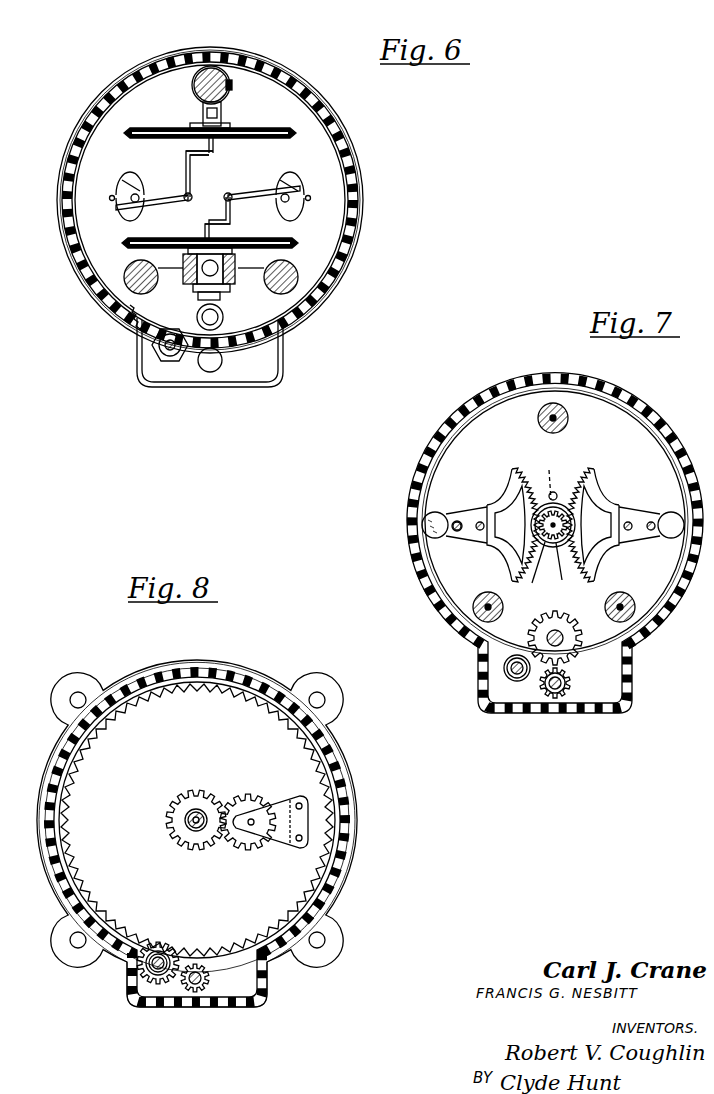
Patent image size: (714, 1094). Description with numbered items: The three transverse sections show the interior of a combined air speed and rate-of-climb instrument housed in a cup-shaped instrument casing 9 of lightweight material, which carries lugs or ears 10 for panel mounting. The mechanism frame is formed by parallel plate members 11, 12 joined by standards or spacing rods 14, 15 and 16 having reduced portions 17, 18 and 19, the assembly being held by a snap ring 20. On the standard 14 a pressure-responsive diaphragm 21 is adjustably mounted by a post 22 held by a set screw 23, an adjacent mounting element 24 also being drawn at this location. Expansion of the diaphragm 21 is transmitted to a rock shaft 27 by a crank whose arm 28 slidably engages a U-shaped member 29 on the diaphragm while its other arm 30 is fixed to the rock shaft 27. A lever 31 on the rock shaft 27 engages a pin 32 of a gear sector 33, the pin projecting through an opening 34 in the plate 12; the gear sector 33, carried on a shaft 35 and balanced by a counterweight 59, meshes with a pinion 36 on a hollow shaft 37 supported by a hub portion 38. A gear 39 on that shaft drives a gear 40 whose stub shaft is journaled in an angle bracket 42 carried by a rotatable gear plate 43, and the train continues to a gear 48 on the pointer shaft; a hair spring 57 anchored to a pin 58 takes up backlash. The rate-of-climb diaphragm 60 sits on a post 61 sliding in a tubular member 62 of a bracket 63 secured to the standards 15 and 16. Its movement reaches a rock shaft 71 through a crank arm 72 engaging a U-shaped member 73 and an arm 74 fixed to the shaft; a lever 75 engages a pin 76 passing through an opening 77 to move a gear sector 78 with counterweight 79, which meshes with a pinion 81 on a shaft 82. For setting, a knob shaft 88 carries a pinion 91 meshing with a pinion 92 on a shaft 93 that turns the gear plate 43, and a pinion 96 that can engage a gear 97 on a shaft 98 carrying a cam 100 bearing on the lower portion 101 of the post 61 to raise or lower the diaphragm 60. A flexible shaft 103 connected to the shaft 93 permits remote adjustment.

In FIG. 6, the instrument casing 9 is at (362, 240).
In FIG. 7, the instrument casing 9 is at (410, 470).
In FIG. 8, the instrument casing 9 is at (352, 770).
In FIG. 8, the lugs or ears 10 is at (58, 690).
In FIG. 7, the plate member 11 is at (665, 432).
In FIG. 6, the plate member 12 is at (355, 170).
In FIG. 6, the standard or spacing rod 14 is at (200, 78).
In FIG. 6, the standard or spacing rod 15 is at (128, 296).
In FIG. 6, the standard or spacing rod 16 is at (292, 290).
In FIG. 7, the reduced portion 17 is at (569, 420).
In FIG. 7, the reduced portion 18 is at (477, 598).
In FIG. 7, the reduced portion 19 is at (632, 600).
In FIG. 8, the snap ring 20 is at (135, 680).
In FIG. 6, the pressure-responsive diaphragm 21 is at (152, 128).
In FIG. 6, the post 22 is at (222, 112).
In FIG. 6, the set screw 23 is at (228, 86).
In FIG. 6, the motor shaft bearing 24 is at (205, 114).
In FIG. 6, the rock shaft 27 is at (193, 200).
In FIG. 6, the crank arm 28 is at (204, 158).
In FIG. 6, the U-shaped member 29 is at (214, 146).
In FIG. 6, the crank arm 30 is at (186, 168).
In FIG. 6, the lever 31 is at (160, 200).
In FIG. 6, the pin 32 is at (125, 196).
In FIG. 7, the pin 32 is at (478, 521).
In FIG. 6, the gear sector 33 is at (128, 178).
In FIG. 7, the gear sector 33 is at (500, 490).
In FIG. 6, the opening 34 is at (120, 210).
In FIG. 7, the shaft 35 is at (456, 531).
In FIG. 7, the pinion 36 is at (547, 478).
In FIG. 8, the hollow shaft 37 is at (188, 832).
In FIG. 8, the hub portion 38 is at (204, 833).
In FIG. 8, the gear 39 is at (170, 822).
In FIG. 8, the gear 40 is at (250, 795).
In FIG. 8, the angle bracket 42 is at (290, 800).
In FIG. 8, the gear plate 43 is at (175, 748).
In FIG. 8, the gear 48 is at (205, 794).
In FIG. 7, the hair spring 57 is at (535, 571).
In FIG. 7, the pin 58 is at (557, 493).
In FIG. 7, the counterweight 59 is at (437, 512).
In FIG. 6, the pressure-responsive diaphragm 60 is at (256, 238).
In FIG. 6, the post 61 is at (230, 286).
In FIG. 6, the tubular member 62 is at (190, 283).
In FIG. 6, the bracket 63 is at (138, 266).
In FIG. 6, the rock shaft 71 is at (230, 193).
In FIG. 6, the crank arm 72 is at (206, 222).
In FIG. 6, the U-shaped member 73 is at (238, 216).
In FIG. 6, the crank arm 74 is at (242, 200).
In FIG. 6, the lever 75 is at (262, 192).
In FIG. 6, the pin 76 is at (304, 210).
In FIG. 7, the pin 76 is at (630, 521).
In FIG. 6, the opening 77 is at (296, 222).
In FIG. 6, the gear sector 78 is at (292, 178).
In FIG. 7, the gear sector 78 is at (616, 490).
In FIG. 7, the counterweight 79 is at (667, 537).
In FIG. 7, the pinion 81 is at (572, 525).
In FIG. 7, the shaft 82 is at (562, 568).
In FIG. 7, the shaft 88 is at (556, 698).
In FIG. 8, the shaft 88 is at (204, 986).
In FIG. 8, the pinion 91 is at (195, 994).
In FIG. 8, the pinion 92 is at (157, 986).
In FIG. 7, the shaft 93 is at (512, 681).
In FIG. 8, the shaft 93 is at (166, 947).
In FIG. 7, the pinion 96 is at (572, 684).
In FIG. 7, the gear 97 is at (575, 628).
In FIG. 7, the shaft 98 is at (565, 638).
In FIG. 6, the cam 100 is at (218, 328).
In FIG. 6, the lower portion of the post 101 is at (222, 298).
In FIG. 6, the flexible shaft 103 is at (170, 366).